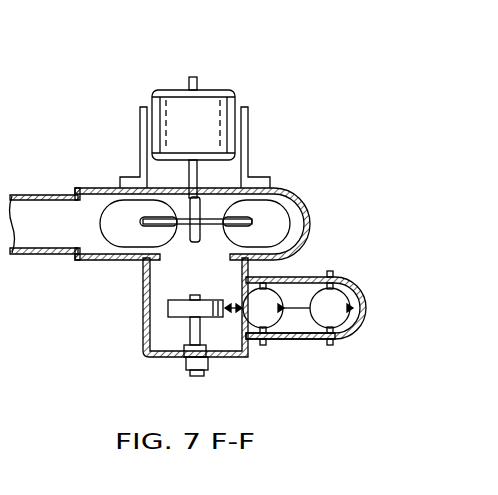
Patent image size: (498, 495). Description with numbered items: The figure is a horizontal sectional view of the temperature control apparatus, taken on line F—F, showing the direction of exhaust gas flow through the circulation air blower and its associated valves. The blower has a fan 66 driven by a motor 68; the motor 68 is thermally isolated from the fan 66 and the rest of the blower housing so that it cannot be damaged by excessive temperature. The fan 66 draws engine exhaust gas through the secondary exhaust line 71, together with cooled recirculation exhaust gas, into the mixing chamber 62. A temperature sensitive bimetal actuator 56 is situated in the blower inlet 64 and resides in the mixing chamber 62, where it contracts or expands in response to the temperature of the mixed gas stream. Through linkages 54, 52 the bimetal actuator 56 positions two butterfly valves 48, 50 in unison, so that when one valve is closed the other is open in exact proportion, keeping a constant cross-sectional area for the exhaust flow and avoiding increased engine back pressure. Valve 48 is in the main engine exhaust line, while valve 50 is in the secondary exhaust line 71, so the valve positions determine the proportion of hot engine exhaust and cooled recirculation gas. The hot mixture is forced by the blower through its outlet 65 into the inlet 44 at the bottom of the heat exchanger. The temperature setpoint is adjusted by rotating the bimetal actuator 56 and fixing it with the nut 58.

The inlet 44 is at (92, 223).
The butterfly valve 48 is at (331, 308).
The butterfly valve 50 is at (276, 308).
The linkage 52 is at (297, 310).
The linkage 54 is at (232, 313).
The bimetal actuator 56 is at (170, 318).
The nut 58 is at (190, 363).
The mixing chamber 62 is at (162, 302).
The inlet 64 is at (219, 282).
The outlet 65 is at (83, 210).
The fan 66 is at (195, 223).
The motor 68 is at (195, 159).
The secondary exhaust line 71 is at (295, 278).